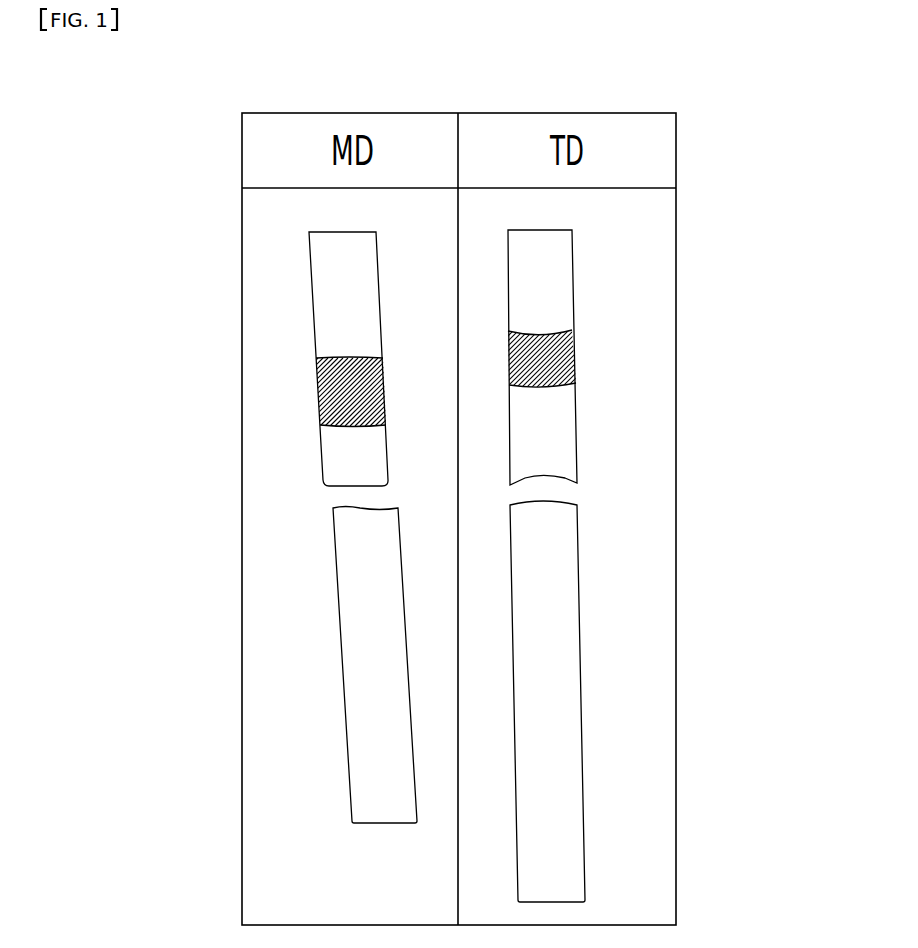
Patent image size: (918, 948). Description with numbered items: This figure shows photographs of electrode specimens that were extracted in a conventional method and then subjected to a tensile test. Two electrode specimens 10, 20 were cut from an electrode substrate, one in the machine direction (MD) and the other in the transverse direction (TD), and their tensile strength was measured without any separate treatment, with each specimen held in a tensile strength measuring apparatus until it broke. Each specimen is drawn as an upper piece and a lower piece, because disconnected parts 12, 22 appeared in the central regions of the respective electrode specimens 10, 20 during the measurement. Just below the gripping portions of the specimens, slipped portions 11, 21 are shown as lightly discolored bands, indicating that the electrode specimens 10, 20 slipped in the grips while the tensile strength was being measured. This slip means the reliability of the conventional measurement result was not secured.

The electrode specimen 10 is at (311, 288).
The slipped portion 11 is at (318, 384).
The disconnected part 12 is at (308, 499).
The electrode specimen 20 is at (573, 276).
The slipped portion 21 is at (574, 357).
The disconnected part 22 is at (606, 490).